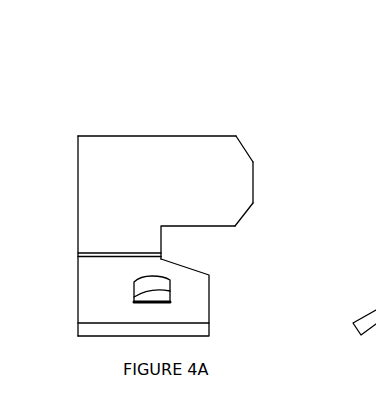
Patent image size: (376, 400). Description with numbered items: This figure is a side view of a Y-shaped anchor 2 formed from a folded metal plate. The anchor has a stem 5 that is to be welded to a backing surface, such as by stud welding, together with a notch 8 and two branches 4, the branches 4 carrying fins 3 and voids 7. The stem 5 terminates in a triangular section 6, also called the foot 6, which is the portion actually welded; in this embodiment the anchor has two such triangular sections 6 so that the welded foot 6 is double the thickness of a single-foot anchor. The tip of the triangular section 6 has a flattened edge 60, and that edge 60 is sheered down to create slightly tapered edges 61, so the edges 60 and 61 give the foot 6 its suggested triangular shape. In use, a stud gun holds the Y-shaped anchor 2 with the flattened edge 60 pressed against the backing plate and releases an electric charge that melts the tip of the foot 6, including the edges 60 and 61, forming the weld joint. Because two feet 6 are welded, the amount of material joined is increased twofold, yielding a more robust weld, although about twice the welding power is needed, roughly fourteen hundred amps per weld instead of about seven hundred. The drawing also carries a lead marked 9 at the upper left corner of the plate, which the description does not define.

The Y-shaped anchor 2 is at (178, 192).
The fins 3 is at (199, 304).
The branches 4 is at (182, 338).
The stem 5 is at (157, 105).
The triangular section 6 is at (244, 226).
The voids 7 is at (199, 284).
The notch 8 is at (207, 244).
The left edge 9 is at (46, 207).
The flattened edge 60 is at (289, 182).
The tapered edges 61 is at (288, 171).